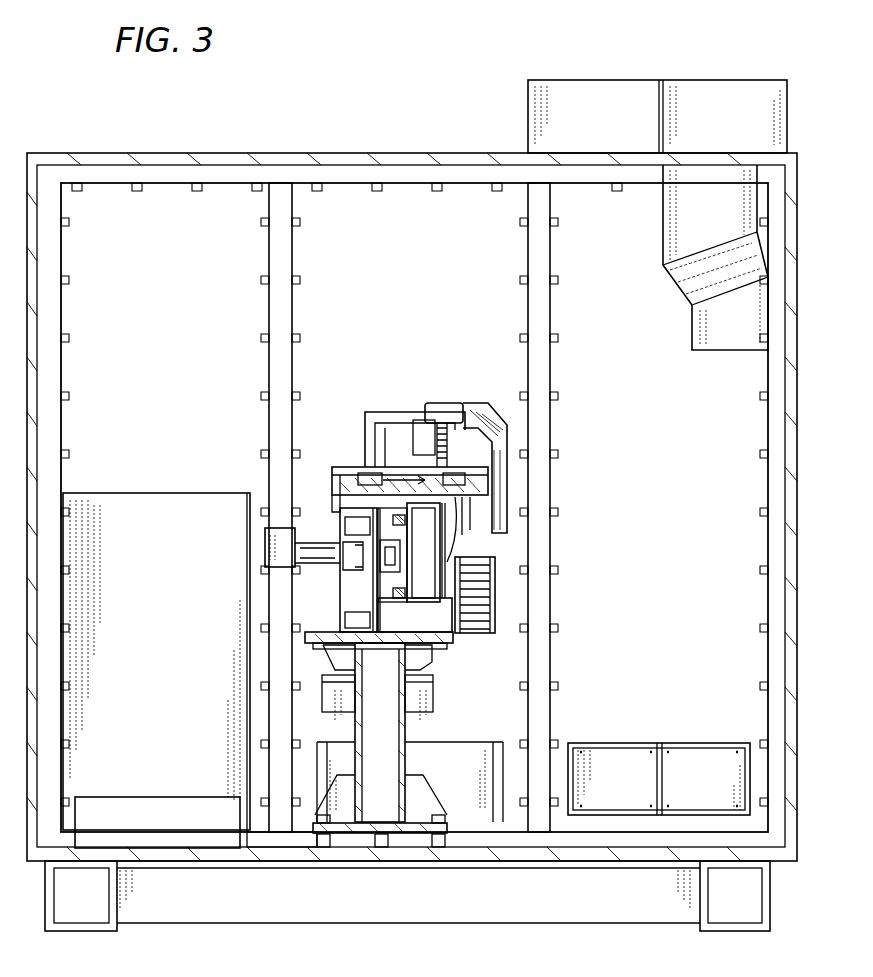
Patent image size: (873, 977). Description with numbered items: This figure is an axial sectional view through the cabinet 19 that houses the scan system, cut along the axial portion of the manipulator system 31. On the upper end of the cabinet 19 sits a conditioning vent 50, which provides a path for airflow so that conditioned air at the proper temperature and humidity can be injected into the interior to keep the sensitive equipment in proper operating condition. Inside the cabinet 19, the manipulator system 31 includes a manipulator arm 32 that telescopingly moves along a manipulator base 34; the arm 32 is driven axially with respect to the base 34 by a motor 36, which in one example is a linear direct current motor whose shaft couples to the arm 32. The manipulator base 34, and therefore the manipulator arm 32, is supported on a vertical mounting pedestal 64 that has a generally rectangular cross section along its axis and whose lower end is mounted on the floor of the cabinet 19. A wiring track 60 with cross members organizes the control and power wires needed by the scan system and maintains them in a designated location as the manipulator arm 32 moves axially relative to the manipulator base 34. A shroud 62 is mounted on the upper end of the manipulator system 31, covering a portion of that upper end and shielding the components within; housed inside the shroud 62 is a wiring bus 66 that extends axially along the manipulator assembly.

The cabinet 19 is at (785, 534).
The conditioning vent 50 is at (736, 95).
The manipulator system 31 is at (362, 333).
The manipulator arm 32 is at (470, 540).
The manipulator base 34 is at (340, 607).
The motor 36 is at (318, 570).
The wiring track 60 is at (488, 603).
The shroud 62 is at (505, 421).
The vertical mounting pedestal 64 is at (407, 726).
The wiring bus 66 is at (433, 403).